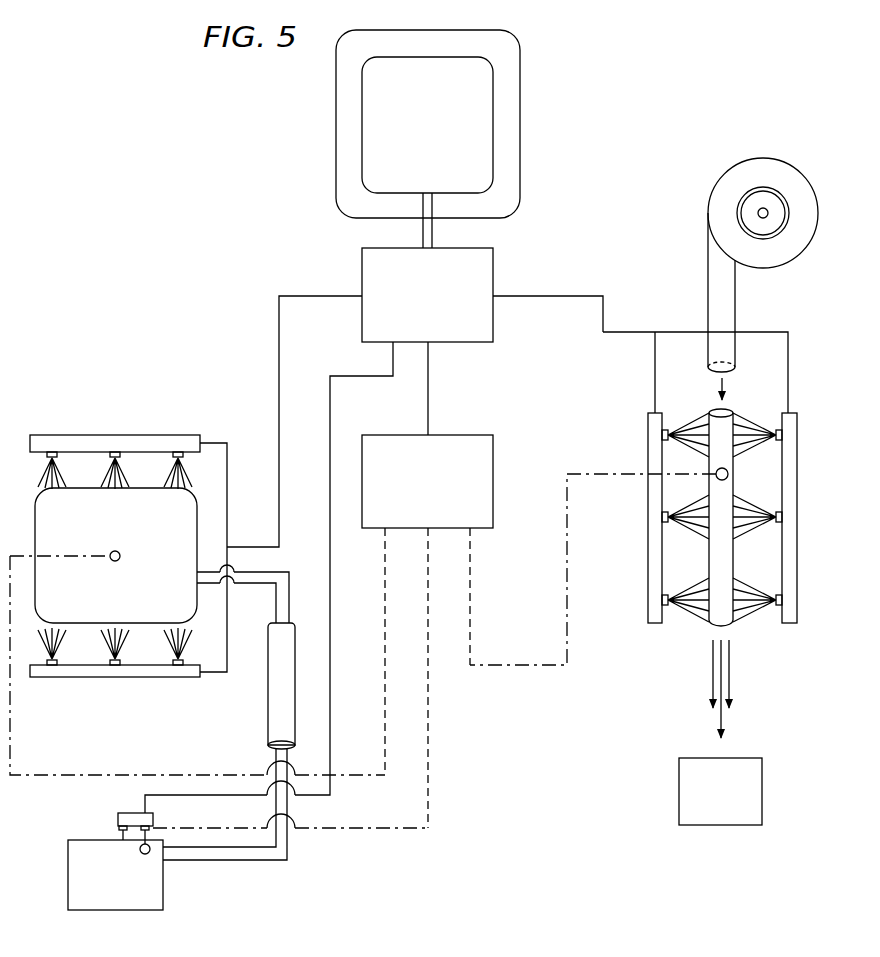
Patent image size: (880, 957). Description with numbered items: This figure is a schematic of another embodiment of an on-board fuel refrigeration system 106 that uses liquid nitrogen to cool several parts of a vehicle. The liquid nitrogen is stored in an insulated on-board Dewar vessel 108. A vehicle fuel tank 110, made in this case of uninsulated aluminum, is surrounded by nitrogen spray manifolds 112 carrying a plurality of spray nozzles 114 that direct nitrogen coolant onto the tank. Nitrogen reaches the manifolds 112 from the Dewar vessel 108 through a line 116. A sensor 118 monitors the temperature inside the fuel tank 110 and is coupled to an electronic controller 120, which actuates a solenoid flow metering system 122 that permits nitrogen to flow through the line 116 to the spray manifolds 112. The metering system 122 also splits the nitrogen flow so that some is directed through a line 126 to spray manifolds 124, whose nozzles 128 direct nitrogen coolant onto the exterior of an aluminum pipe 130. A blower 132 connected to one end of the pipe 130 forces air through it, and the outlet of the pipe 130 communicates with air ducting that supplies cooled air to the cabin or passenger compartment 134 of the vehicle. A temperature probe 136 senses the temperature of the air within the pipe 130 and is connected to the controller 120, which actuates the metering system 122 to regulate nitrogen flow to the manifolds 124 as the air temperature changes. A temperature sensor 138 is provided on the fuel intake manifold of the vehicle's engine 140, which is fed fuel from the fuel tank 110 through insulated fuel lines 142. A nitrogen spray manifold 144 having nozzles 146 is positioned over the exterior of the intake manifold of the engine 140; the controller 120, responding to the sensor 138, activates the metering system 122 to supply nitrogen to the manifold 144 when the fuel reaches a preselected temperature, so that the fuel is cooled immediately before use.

The on-board fuel refrigeration system 106 is at (532, 71).
The on-board Dewar vessel 108 is at (497, 132).
The vehicle fuel tank 110 is at (148, 495).
The nitrogen spray manifolds 112 is at (90, 437).
The spray nozzles 114 is at (48, 455).
The line 116 is at (279, 348).
The sensor 118 is at (120, 553).
The electronic controller 120 is at (490, 443).
The solenoid flow metering system 122 is at (488, 256).
The spray manifolds 124 is at (797, 612).
The line 126 is at (641, 332).
The nozzles 128 is at (776, 430).
The aluminum pipe 130 is at (715, 432).
The blower 132 is at (770, 163).
The cabin or passenger compartment 134 is at (760, 787).
The temperature probe 136 is at (716, 471).
The temperature sensor 138 is at (140, 852).
The engine 140 is at (68, 900).
The insulated fuel lines 142 is at (270, 758).
The nitrogen spray manifold 144 is at (120, 813).
The nozzles 146 is at (118, 829).